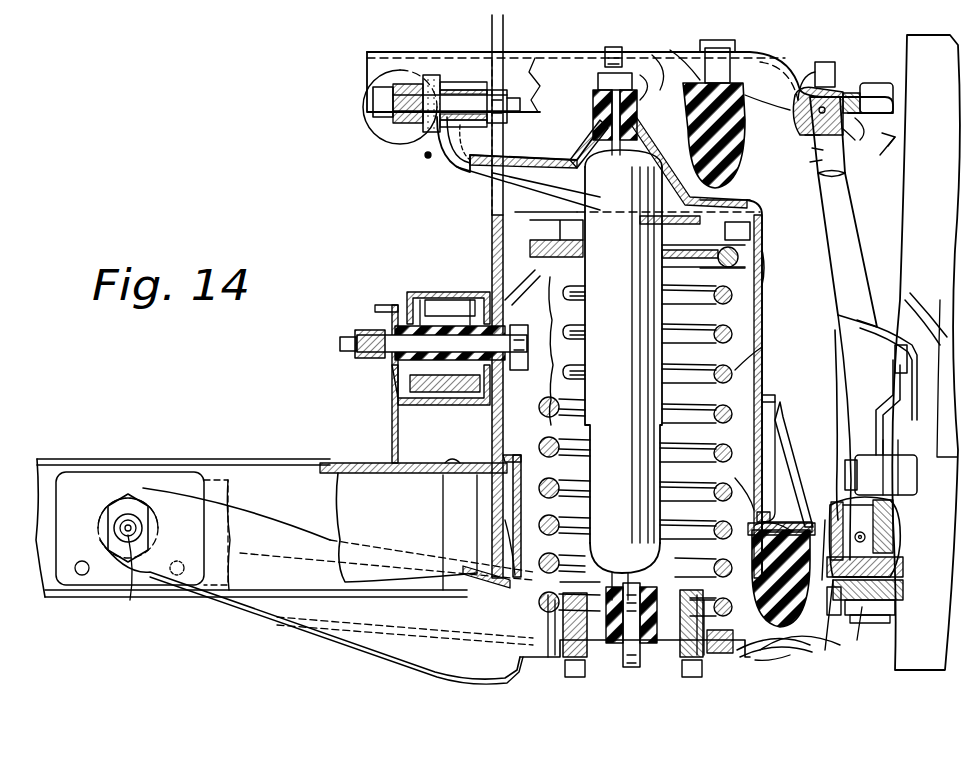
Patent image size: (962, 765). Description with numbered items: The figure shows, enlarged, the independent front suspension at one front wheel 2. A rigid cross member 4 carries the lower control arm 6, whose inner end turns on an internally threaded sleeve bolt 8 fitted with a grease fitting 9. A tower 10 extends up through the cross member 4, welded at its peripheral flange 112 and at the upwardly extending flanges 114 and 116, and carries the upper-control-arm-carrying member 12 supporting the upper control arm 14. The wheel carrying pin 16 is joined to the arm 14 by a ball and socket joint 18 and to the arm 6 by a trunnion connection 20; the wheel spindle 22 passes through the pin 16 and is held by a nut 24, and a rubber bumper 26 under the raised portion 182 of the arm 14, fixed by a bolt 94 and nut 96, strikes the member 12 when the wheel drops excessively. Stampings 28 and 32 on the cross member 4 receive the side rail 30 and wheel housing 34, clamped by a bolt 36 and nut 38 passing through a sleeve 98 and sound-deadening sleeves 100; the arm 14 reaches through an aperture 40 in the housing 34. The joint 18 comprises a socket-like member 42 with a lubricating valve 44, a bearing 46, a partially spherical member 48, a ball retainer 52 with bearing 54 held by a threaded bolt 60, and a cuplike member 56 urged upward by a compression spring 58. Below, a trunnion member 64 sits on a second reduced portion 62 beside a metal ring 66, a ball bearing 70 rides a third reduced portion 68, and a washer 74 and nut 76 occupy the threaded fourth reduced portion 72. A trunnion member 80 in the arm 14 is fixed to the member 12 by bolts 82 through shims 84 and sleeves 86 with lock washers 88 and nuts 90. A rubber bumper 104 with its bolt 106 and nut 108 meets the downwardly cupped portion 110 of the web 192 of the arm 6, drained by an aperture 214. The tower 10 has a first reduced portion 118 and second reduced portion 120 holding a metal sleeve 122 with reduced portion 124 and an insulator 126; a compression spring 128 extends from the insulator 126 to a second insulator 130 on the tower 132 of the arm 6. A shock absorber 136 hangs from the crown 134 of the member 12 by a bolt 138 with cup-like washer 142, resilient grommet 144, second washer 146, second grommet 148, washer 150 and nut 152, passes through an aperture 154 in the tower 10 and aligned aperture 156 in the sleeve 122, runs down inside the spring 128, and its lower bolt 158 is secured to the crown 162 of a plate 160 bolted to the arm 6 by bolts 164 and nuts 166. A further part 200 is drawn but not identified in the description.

The front wheel 2 is at (926, 352).
The cross member 4 is at (45, 536).
The lower control arm 6 is at (215, 585).
The bolt 8 is at (130, 510).
The grease fitting 9 is at (134, 576).
The tower 10 is at (530, 260).
The upper-control-arm-carrying member 12 is at (462, 170).
The upper control arm 14 is at (552, 58).
The wheel carrying pin 16 is at (862, 240).
The ball and socket joint 18 is at (890, 150).
The trunnion connection 20 is at (858, 640).
The wheel spindle 22 is at (902, 348).
The nut 24 is at (875, 400).
The rubber bumper 26 is at (748, 108).
The sheet metal stamping 28 is at (512, 435).
The side rail 30 is at (410, 300).
The stamping 32 is at (390, 418).
The wheel housing 34 is at (503, 26).
The bolt 36 is at (442, 343).
The nut 38 is at (364, 360).
The aperture 40 is at (504, 48).
The socket-like member 42 is at (832, 85).
The lubricating valve 44 is at (825, 62).
The bearing 46 is at (800, 92).
The partially spherical member 48 is at (858, 93).
The ball retainer 52 is at (865, 128).
The bearing 54 is at (846, 137).
The cuplike member 56 is at (805, 136).
The compression spring 58 is at (815, 150).
The threaded bolt 60 is at (882, 83).
The second reduced portion 62 is at (902, 537).
The trunnion member 64 is at (900, 557).
The metal ring 66 is at (900, 512).
The third reduced portion 68 is at (904, 572).
The ball bearing 70 is at (904, 590).
The fourth reduced portion 72 is at (890, 623).
The washer 74 is at (896, 610).
The nut 76 is at (838, 616).
The trunnion member 80 is at (392, 80).
The bolt 82 is at (372, 101).
The shim 84 is at (428, 75).
The sleeve 86 is at (456, 88).
The lock washer 88 is at (484, 82).
The nut 90 is at (505, 88).
The bolt 94 is at (728, 72).
The nut 96 is at (716, 40).
The sleeve 98 is at (450, 300).
The sleeve 100 is at (428, 298).
The rubber bumper 104 is at (785, 627).
The bolt 106 is at (790, 525).
The nut 108 is at (795, 518).
The downwardly cupped portion 110 is at (790, 660).
The peripheral flange 112 is at (490, 588).
The peripheral flange 114 is at (508, 555).
The peripheral flange 116 is at (776, 398).
The first reduced portion 118 is at (766, 268).
The second reduced portion 120 is at (754, 230).
The metal sleeve 122 is at (742, 258).
The reduced portion 124 is at (720, 236).
The insulator 126 is at (740, 268).
The compression spring 128 is at (764, 347).
The second insulator 130 is at (555, 648).
The tower 132 is at (566, 630).
The crown 134 is at (714, 137).
The shock absorber 136 is at (594, 278).
The bolt 138 is at (592, 101).
The cup-like washer 142 is at (636, 165).
The resilient grommet 144 is at (650, 122).
The second washer 146 is at (651, 87).
The second grommet 148 is at (656, 72).
The washer 150 is at (597, 82).
The nut 152 is at (604, 58).
The aperture 154 is at (700, 216).
The second aperture 156 is at (750, 210).
The bolt 158 is at (660, 592).
The plate 160 is at (572, 668).
The crown 162 is at (645, 668).
The bolt 164 is at (587, 668).
The nut 166 is at (580, 595).
The raised portion 182 is at (676, 55).
The web 192 is at (793, 450).
The bracket 200 is at (897, 455).
The aperture 214 is at (775, 660).